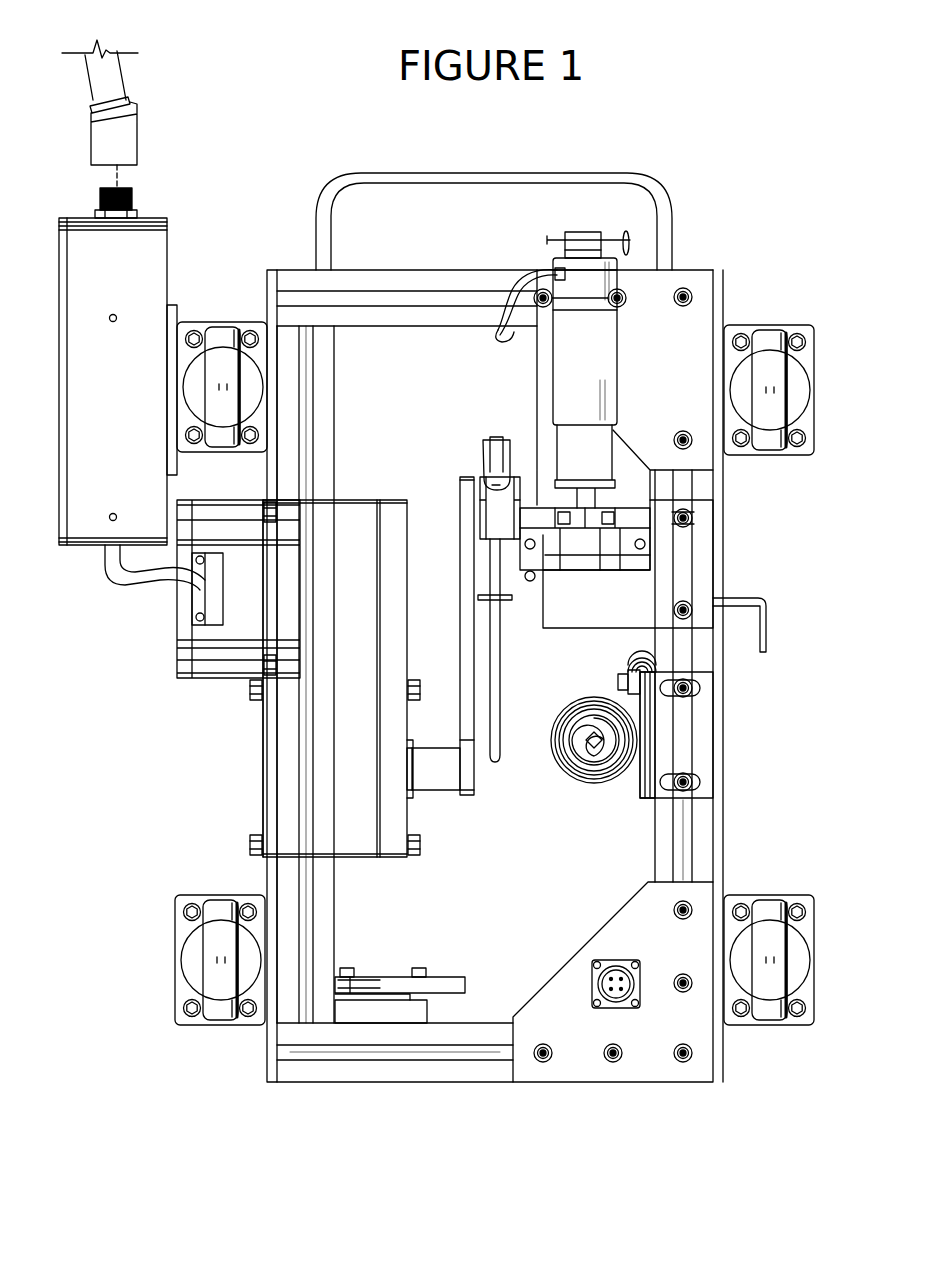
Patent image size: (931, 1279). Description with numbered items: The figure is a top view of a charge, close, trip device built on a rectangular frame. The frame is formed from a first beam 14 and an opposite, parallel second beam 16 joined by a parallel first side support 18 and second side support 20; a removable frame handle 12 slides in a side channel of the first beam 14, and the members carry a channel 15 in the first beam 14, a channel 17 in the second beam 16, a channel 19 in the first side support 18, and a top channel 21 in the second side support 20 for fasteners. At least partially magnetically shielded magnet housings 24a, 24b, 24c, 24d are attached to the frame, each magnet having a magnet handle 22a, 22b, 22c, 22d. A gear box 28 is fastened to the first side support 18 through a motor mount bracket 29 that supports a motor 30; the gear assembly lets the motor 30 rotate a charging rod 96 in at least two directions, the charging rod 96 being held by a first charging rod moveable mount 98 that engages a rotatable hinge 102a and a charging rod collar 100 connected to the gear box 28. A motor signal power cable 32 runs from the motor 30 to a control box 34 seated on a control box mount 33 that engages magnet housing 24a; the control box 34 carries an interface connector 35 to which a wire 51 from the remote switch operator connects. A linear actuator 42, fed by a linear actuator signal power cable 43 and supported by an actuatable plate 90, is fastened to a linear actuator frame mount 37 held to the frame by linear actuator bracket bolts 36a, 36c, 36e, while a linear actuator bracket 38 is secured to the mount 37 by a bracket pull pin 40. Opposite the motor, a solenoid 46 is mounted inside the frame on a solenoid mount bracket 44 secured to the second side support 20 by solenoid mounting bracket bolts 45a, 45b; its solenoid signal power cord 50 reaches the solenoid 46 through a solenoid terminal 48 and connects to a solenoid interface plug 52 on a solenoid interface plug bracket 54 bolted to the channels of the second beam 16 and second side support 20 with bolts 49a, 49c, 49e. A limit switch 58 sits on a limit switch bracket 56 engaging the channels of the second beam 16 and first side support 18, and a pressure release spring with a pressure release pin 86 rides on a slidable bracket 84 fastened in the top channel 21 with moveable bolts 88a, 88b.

The frame handle 12 is at (480, 186).
The first beam 14 is at (372, 288).
The channel 15 is at (408, 298).
The second beam 16 is at (380, 1074).
The channel 17 is at (410, 1056).
The first side support 18 is at (319, 920).
The channel 19 is at (308, 900).
The second side support 20 is at (664, 860).
The top channel 21 is at (678, 834).
The magnet handle 22a is at (220, 350).
The magnet handle 22b is at (768, 350).
The magnet handle 22c is at (770, 1010).
The magnet handle 22d is at (222, 1010).
The magnetically shielded magnet housing 24a is at (257, 322).
The magnetically shielded magnet housing 24b is at (812, 322).
The magnetically shielded magnet housing 24c is at (804, 1024).
The magnetically shielded magnet housing 24d is at (254, 1024).
The gear box 28 is at (303, 748).
The motor mount bracket 29 is at (268, 806).
The motor 30 is at (234, 592).
The motor signal power cable 32 is at (120, 576).
The control box mount 33 is at (176, 467).
The control box 34 is at (82, 372).
The interface connector 35 is at (98, 206).
The linear actuator bracket bolt 36a is at (540, 310).
The linear actuator bracket bolt 36c is at (690, 294).
The linear actuator bracket bolt 36e is at (678, 438).
The linear actuator frame mount 37 is at (674, 276).
The linear actuator bracket 38 is at (568, 240).
The bracket pull pin 40 is at (620, 242).
The linear actuator 42 is at (556, 400).
The linear actuator signal power cable 43 is at (538, 290).
The solenoid mount bracket 44 is at (694, 730).
The solenoid mounting bracket bolt 45a is at (692, 688).
The solenoid mounting bracket bolt 45b is at (692, 782).
The solenoid 46 is at (574, 762).
The solenoid terminal 48 is at (618, 682).
The bolt 49a is at (690, 910).
The bolt 49c is at (683, 1062).
The bolt 49e is at (543, 1062).
The solenoid signal power cord 50 is at (634, 666).
The wire 51 is at (130, 140).
The solenoid interface plug 52 is at (618, 972).
The solenoid interface plug bracket 54 is at (558, 984).
The limit switch bracket 56 is at (456, 1012).
The limit switch 58 is at (400, 984).
The slidable bracket 84 is at (694, 565).
The pressure release pin 86 is at (766, 616).
The moveable bolt 88a is at (692, 522).
The moveable bolt 88b is at (692, 616).
The actuatable plate 90 is at (564, 524).
The charging rod 96 is at (500, 660).
The first charging rod moveable mount 98 is at (464, 628).
The charging rod collar 100 is at (446, 776).
The rotatable hinge 102a is at (484, 466).